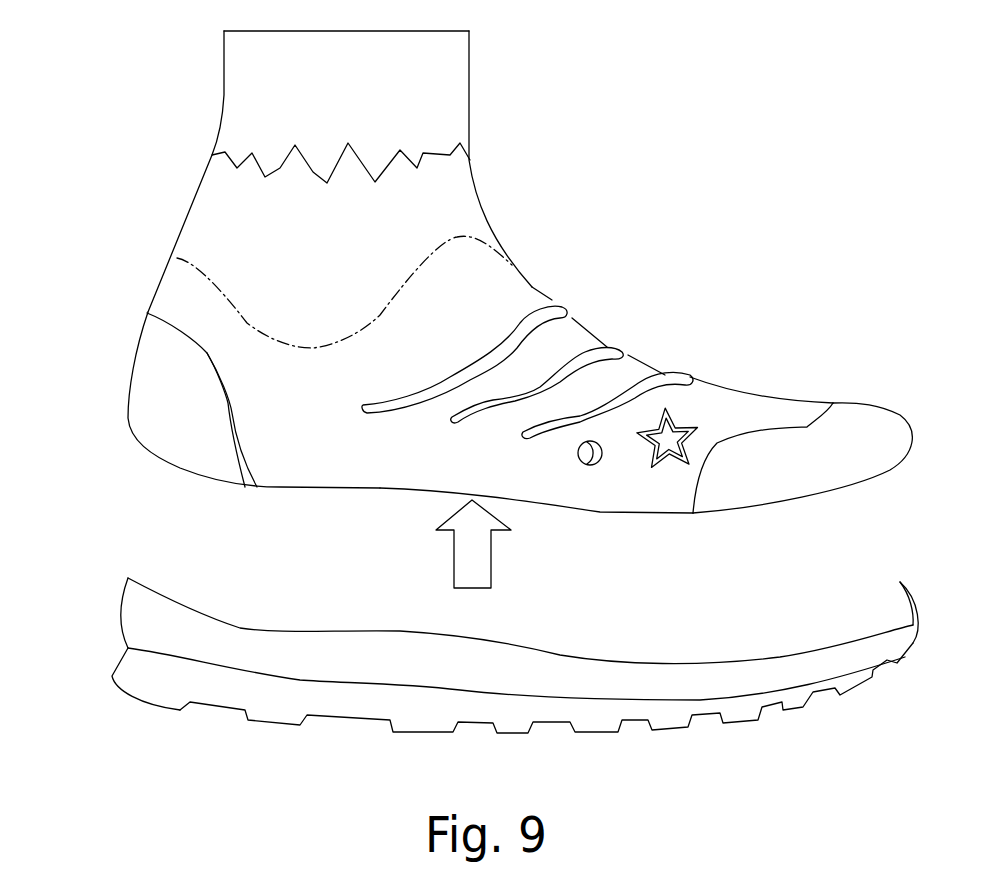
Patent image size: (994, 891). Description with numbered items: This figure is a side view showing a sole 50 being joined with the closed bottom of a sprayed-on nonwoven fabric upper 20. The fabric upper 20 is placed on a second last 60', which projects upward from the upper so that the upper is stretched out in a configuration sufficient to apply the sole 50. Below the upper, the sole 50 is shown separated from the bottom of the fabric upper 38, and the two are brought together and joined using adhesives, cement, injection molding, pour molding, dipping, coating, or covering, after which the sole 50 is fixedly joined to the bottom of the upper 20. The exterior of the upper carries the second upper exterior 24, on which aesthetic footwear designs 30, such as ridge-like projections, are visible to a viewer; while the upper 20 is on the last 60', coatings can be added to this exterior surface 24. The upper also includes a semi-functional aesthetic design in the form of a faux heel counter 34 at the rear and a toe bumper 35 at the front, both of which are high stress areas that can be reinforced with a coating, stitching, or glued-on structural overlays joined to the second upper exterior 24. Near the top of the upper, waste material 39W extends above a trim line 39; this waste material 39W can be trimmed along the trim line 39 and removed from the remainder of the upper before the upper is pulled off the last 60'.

The second last 60' is at (351, 171).
The waste material 39W is at (213, 213).
The trim line 39 is at (205, 268).
The heel counter 34 is at (143, 392).
The fabric upper 20 is at (532, 287).
The aesthetic footwear designs 30 is at (673, 355).
The second upper exterior 24 is at (723, 405).
The toe bumper 35 is at (866, 420).
The bottom of the fabric upper 38 is at (392, 483).
The sole 50 is at (86, 630).